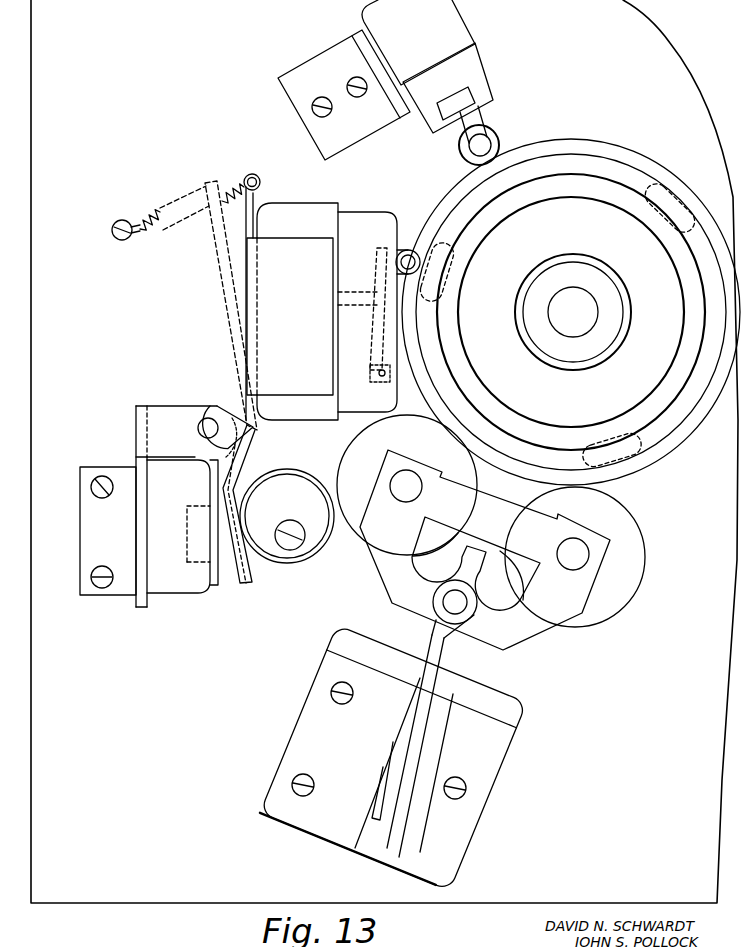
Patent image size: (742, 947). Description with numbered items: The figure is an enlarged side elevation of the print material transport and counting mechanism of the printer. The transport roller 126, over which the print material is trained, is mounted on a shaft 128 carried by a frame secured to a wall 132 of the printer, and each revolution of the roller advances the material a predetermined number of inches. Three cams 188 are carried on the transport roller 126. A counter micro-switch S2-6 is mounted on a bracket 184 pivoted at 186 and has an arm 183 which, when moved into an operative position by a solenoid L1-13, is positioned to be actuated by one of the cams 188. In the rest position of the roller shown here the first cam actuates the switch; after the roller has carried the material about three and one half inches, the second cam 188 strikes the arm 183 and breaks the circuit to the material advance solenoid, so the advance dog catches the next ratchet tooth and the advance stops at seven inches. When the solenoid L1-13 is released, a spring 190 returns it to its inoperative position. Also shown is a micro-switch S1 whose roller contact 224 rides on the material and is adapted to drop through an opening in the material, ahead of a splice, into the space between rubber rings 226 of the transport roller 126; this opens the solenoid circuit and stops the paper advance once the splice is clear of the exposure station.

The wall 132 is at (108, 365).
The transport roller 126 is at (663, 422).
The rubber rings 226 is at (560, 145).
The shaft 128 is at (587, 320).
The cams 188 is at (435, 247).
The micro-switch S1 is at (457, 27).
The roller contact 224 is at (489, 129).
The counter micro-switch S2-6 is at (268, 292).
The arm 183 is at (398, 246).
The spring 190 is at (144, 215).
The pivot 186 is at (207, 424).
The bracket 184 is at (248, 445).
The solenoid L1-13 is at (158, 585).